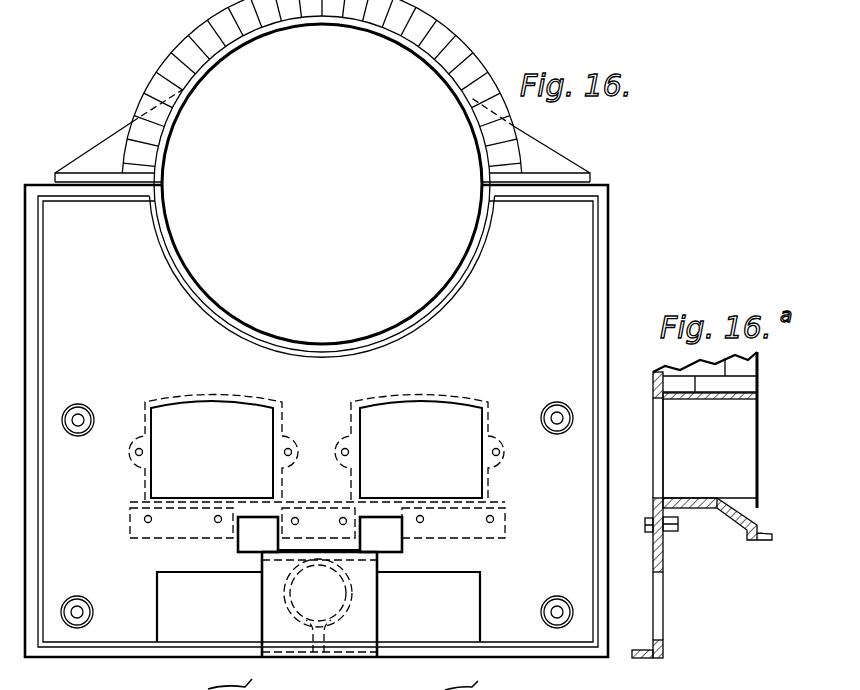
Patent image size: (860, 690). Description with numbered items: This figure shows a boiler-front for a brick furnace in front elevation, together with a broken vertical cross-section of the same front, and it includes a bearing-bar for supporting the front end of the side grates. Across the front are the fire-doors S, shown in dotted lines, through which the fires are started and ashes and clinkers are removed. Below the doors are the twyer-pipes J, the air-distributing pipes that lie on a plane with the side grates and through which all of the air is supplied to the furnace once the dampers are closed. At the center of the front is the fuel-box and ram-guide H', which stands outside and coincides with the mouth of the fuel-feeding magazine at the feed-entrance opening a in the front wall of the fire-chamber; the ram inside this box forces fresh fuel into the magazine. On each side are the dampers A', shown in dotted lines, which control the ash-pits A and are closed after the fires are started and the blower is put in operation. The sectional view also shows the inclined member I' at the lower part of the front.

In FIG. 16, the fire-door S is at (316, 448).
In FIG. 16A, the fire-door S is at (710, 448).
In FIG. 16, the twyer-pipe J is at (320, 534).
In FIG. 16, the fuel-box and ram-guide H' is at (319, 604).
In FIG. 16, the damper A' is at (318, 607).
In FIG. 16A, the damper A' is at (664, 615).
In FIG. 16, the feed-entrance opening a is at (341, 618).
In FIG. 16A, the inclined plate I' is at (735, 529).
In FIG. 16A, the ash-pit A is at (678, 496).